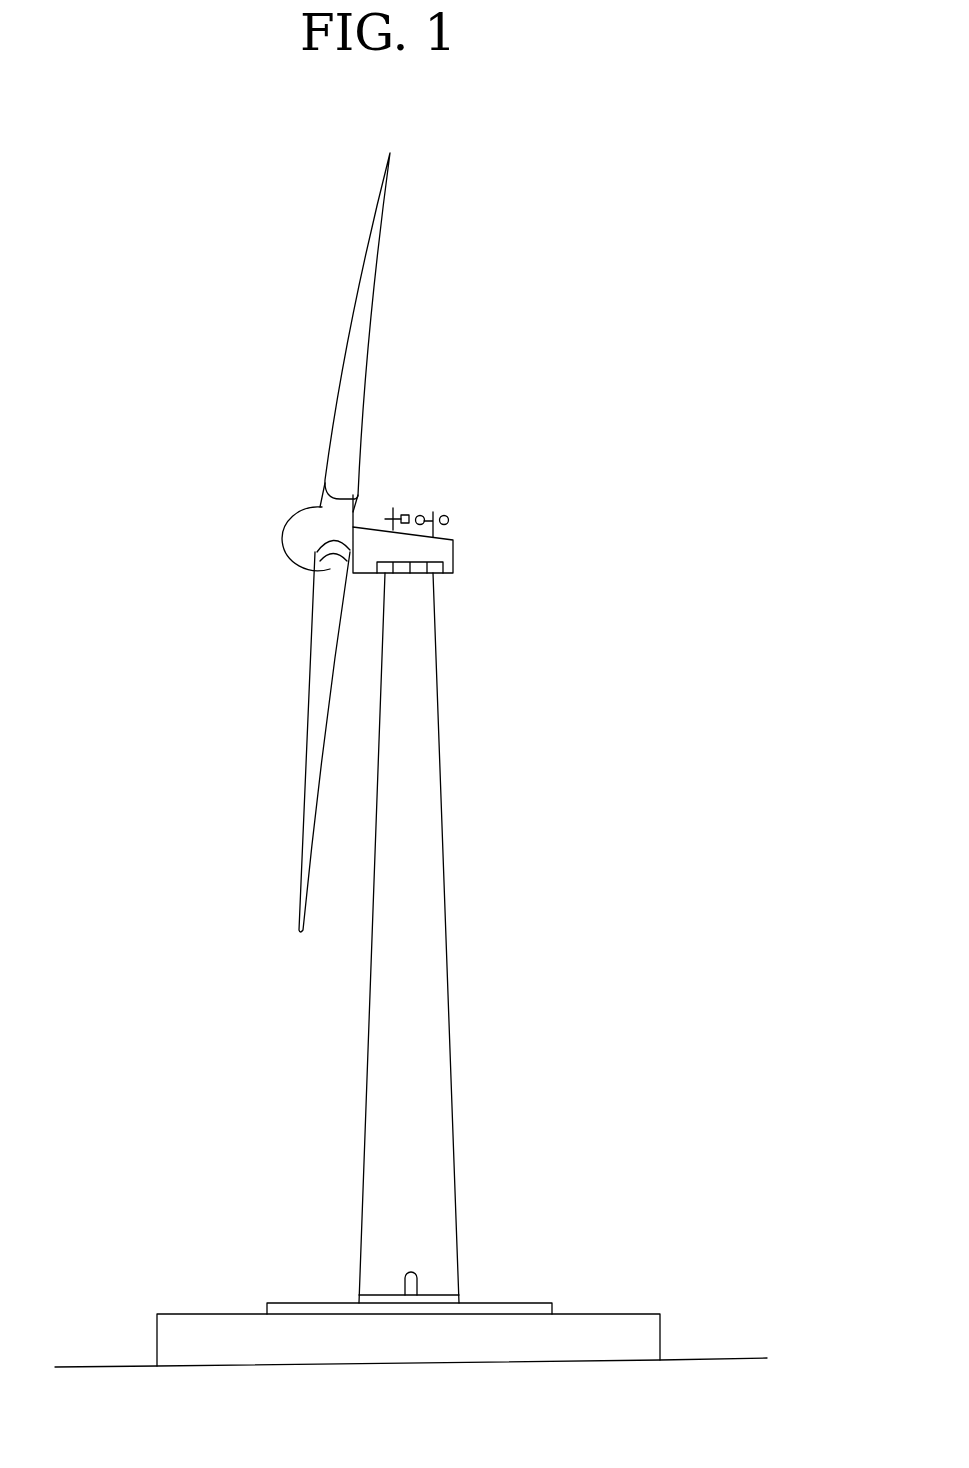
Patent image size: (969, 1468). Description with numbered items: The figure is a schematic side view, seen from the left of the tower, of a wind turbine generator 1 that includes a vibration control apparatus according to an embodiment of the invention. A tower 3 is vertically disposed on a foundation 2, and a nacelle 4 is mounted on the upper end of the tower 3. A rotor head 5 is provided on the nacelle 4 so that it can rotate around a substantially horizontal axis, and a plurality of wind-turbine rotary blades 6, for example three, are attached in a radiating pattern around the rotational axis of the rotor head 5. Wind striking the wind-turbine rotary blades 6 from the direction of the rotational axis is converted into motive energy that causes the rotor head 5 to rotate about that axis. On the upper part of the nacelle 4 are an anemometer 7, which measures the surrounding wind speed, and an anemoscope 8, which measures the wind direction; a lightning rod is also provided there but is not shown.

The wind turbine generator 1 is at (590, 392).
The foundation 2 is at (616, 1313).
The tower 3 is at (442, 777).
The nacelle 4 is at (453, 553).
The rotor head 5 is at (280, 530).
The wind-turbine rotary blade 6 is at (380, 267).
The anemometer 7 is at (449, 518).
The anemoscope 8 is at (405, 514).